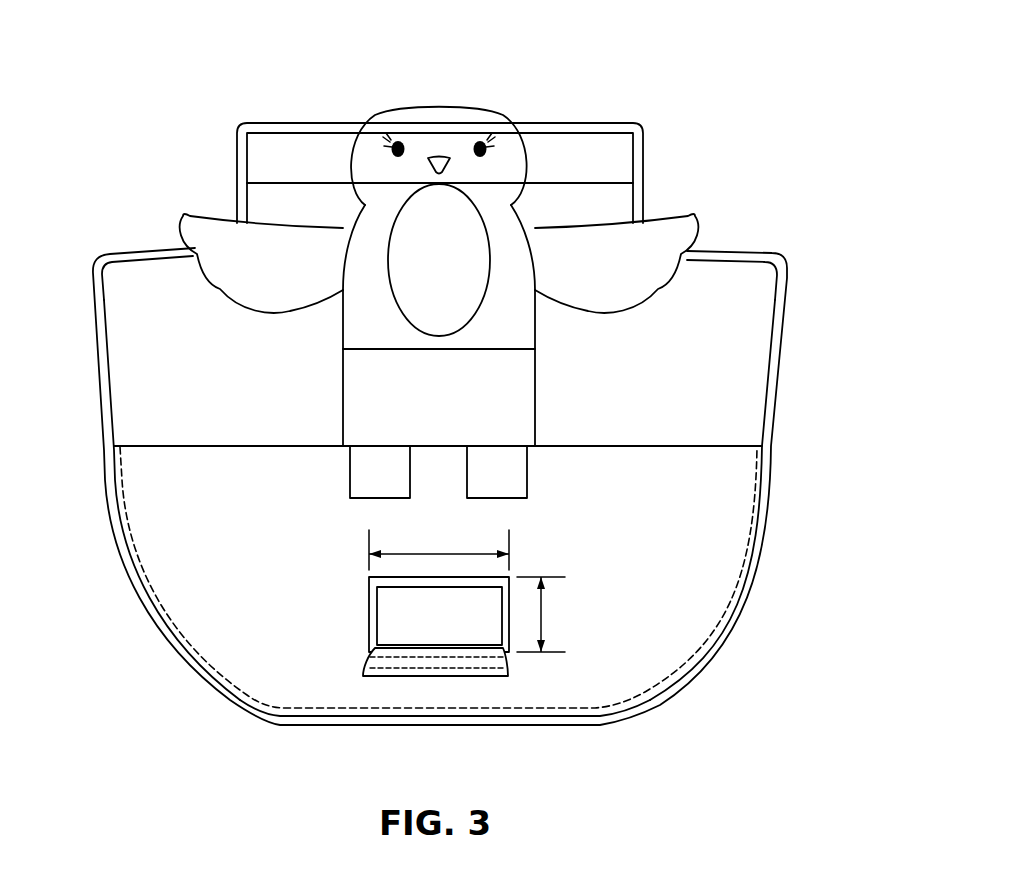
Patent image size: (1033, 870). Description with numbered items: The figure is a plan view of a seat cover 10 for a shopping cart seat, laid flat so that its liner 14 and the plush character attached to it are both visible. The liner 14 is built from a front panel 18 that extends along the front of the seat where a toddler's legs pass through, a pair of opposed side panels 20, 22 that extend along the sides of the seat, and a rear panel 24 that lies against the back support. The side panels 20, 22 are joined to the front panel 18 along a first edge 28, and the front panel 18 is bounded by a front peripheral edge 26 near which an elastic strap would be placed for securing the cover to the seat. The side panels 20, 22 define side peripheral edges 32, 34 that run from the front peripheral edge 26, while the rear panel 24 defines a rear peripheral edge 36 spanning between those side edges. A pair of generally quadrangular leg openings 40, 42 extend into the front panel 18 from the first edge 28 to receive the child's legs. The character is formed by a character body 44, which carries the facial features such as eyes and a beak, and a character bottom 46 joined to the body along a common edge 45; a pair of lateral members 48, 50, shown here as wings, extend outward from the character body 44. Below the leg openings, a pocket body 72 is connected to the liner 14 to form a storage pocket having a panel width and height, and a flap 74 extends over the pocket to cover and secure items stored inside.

The seat cover 10 is at (684, 69).
The liner 14 is at (772, 581).
The front panel 18 is at (211, 651).
The side panel 20 is at (132, 278).
The side panel 22 is at (753, 275).
The rear panel 24 is at (617, 202).
The front peripheral edge 26 is at (583, 725).
The first edge 28 is at (180, 444).
The side peripheral edge 32 is at (93, 337).
The side peripheral edge 34 is at (783, 335).
The rear peripheral edge 36 is at (565, 122).
The leg opening 40 is at (358, 475).
The leg opening 42 is at (518, 473).
The character body 44 is at (494, 316).
The common edge 45 is at (362, 349).
The character bottom 46 is at (503, 410).
The lateral member 48 is at (187, 223).
The lateral member 50 is at (691, 224).
The pocket body 72 is at (388, 612).
The flap 74 is at (400, 663).